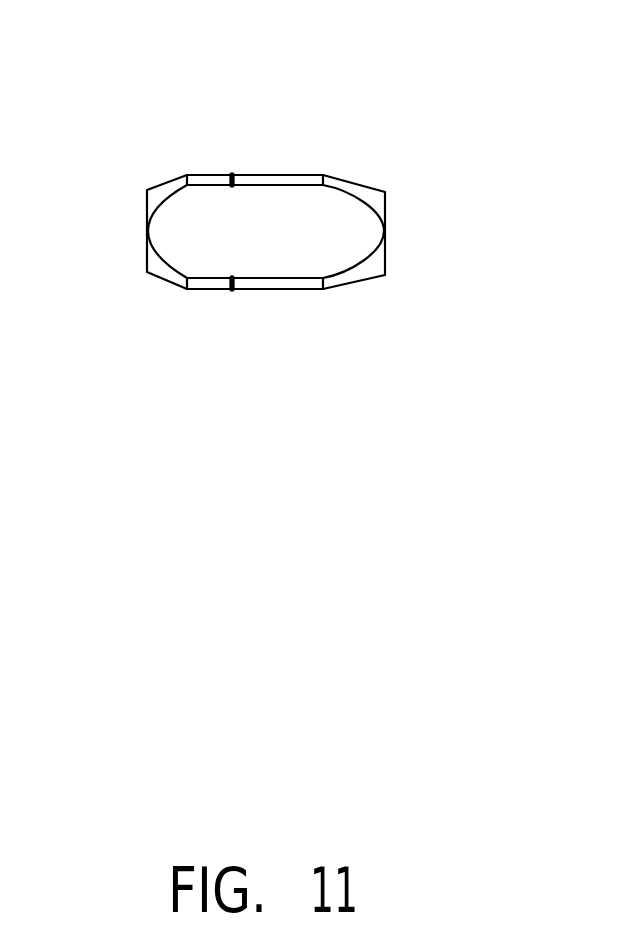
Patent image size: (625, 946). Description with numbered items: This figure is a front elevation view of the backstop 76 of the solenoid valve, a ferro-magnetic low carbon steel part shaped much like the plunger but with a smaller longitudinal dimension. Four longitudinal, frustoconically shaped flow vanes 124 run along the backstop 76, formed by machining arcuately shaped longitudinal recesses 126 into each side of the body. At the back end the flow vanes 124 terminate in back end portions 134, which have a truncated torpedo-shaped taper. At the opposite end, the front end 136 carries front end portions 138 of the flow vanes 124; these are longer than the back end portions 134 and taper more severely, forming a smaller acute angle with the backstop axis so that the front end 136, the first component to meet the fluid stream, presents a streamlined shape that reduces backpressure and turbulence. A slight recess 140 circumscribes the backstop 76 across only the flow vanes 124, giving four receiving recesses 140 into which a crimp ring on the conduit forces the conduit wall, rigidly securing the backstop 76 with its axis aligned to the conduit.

The backstop 76 is at (185, 148).
The flow vanes 124 is at (270, 179).
The longitudinal recesses 126 is at (187, 253).
The back end portions 134 is at (160, 186).
The front end 136 is at (389, 234).
The front end portions 138 is at (355, 187).
The recess 140 is at (233, 173).